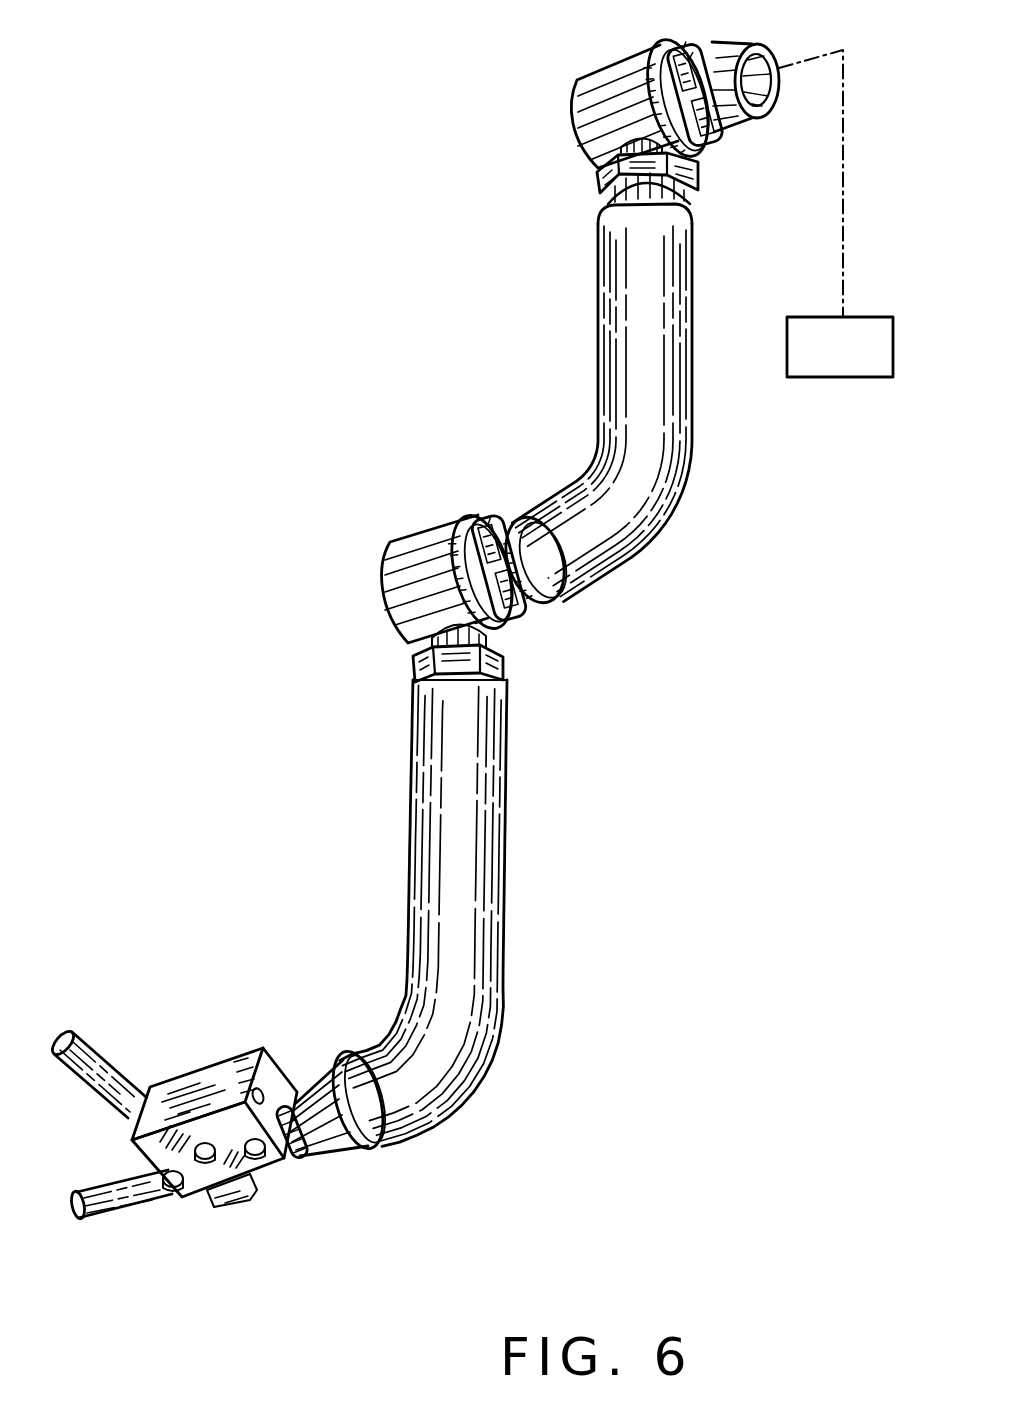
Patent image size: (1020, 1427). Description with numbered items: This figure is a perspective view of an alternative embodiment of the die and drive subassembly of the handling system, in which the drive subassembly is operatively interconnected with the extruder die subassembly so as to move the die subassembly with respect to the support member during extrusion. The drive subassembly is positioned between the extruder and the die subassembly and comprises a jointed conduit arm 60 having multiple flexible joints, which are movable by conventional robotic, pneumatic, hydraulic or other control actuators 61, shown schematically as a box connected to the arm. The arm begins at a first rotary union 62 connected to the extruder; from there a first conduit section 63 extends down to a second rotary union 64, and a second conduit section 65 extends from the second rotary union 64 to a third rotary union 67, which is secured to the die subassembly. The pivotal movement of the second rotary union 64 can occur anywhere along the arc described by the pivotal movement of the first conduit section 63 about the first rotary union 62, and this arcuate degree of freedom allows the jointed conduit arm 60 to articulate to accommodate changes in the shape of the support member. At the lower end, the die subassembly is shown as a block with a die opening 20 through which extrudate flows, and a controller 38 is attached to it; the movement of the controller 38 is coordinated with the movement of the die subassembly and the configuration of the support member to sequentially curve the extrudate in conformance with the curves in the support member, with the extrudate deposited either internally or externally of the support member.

The die opening 20 is at (228, 1198).
The controller 38 is at (98, 1058).
The jointed conduit arm 60 is at (662, 536).
The control actuators 61 is at (807, 317).
The first rotary union 62 is at (614, 78).
The first conduit section 63 is at (600, 316).
The second rotary union 64 is at (432, 568).
The second conduit section 65 is at (508, 880).
The third rotary union 67 is at (338, 1148).